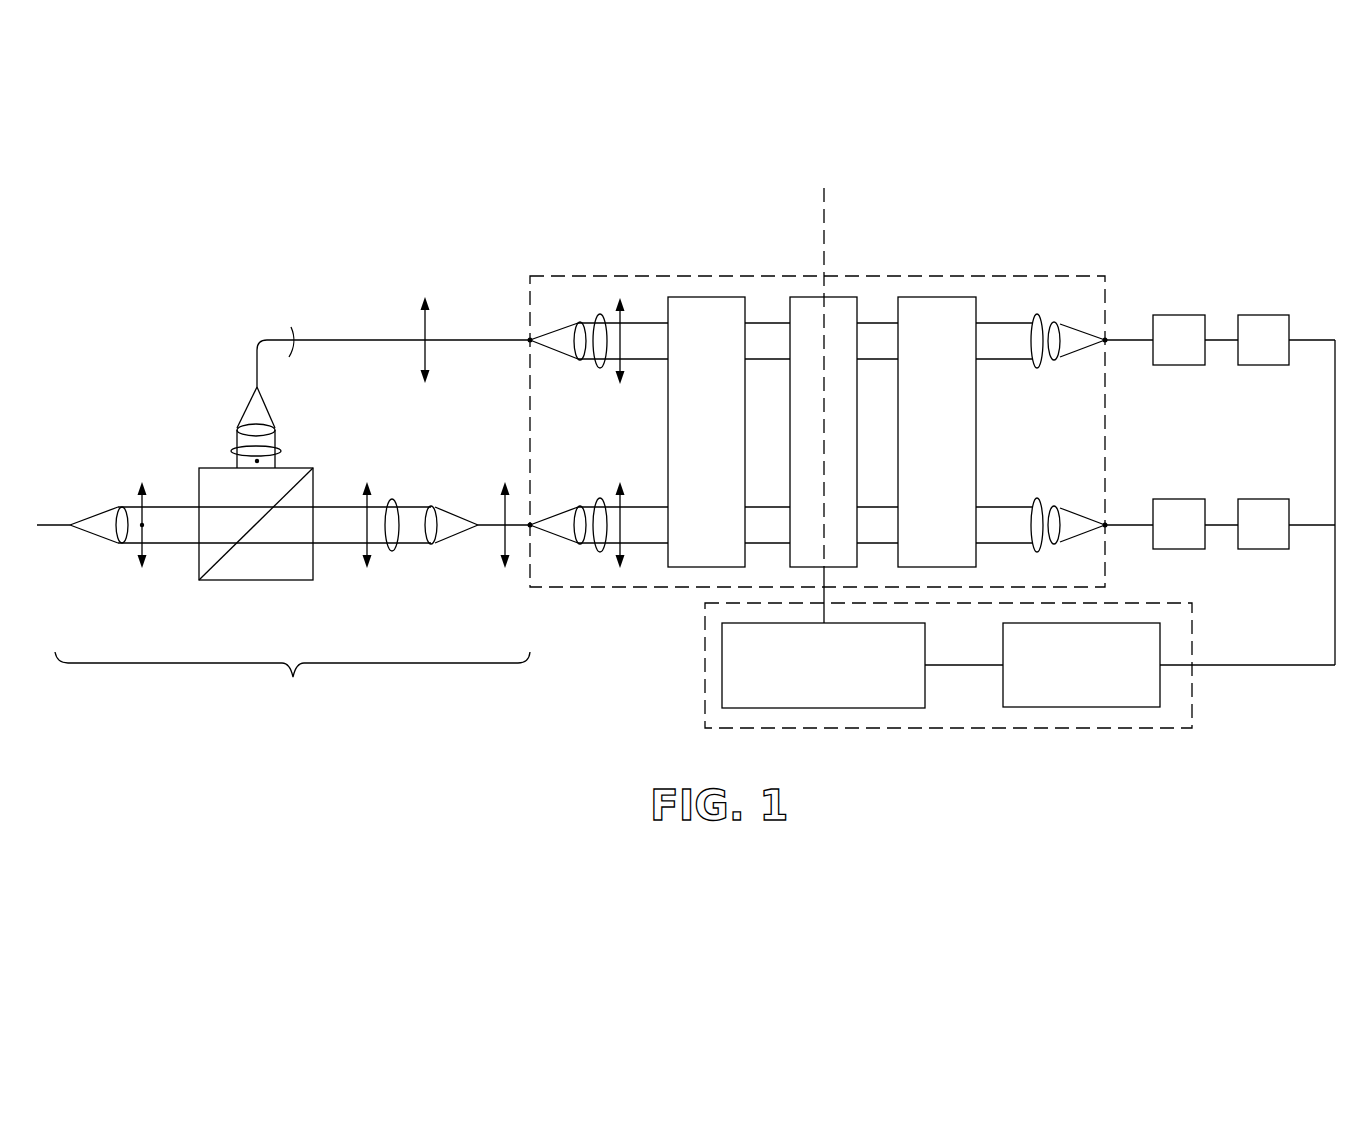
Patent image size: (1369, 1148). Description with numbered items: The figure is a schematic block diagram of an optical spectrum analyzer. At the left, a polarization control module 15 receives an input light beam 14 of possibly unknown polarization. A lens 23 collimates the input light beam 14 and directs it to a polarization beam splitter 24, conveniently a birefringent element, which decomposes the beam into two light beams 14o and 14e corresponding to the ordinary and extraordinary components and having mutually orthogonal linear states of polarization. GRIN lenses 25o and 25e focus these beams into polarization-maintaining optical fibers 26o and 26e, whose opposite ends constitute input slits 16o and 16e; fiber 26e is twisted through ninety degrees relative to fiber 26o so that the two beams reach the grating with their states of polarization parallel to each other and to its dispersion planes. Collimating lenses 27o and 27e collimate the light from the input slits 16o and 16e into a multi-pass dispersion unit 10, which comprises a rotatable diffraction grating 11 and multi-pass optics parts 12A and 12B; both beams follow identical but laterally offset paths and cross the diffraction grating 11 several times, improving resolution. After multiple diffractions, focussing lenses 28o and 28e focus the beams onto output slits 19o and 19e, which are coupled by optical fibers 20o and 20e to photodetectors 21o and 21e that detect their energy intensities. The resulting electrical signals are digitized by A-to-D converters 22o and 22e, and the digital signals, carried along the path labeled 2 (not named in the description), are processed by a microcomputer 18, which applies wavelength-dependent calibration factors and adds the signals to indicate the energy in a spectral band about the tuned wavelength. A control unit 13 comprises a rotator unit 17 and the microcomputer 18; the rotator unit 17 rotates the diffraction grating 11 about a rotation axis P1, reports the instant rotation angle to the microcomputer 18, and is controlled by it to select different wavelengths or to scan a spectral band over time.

The signal line 2 is at (1325, 602).
The multi-pass dispersion unit 10 is at (752, 276).
The diffraction grating 11 is at (810, 297).
The multi-pass optics part 12A is at (712, 297).
The multi-pass optics part 12B is at (940, 297).
The control unit 13 is at (947, 730).
The input light beam 14 is at (49, 522).
The light beam (extraordinary component) 14e is at (231, 451).
The light beam (ordinary component) 14o is at (392, 500).
The polarization control module 15 is at (292, 686).
The input slit 16e is at (527, 339).
The input slit 16o is at (531, 528).
The rotator unit 17 is at (830, 708).
The microcomputer 18 is at (1055, 707).
The output slit 19e is at (1107, 338).
The output slit 19o is at (1107, 522).
The optical fiber 20e is at (1132, 340).
The optical fiber 20o is at (1132, 524).
The photodetector 21e is at (1193, 315).
The photodetector 21o is at (1192, 500).
The A-to-D converter 22e is at (1267, 315).
The A-to-D converter 22o is at (1265, 500).
The lens 23 is at (113, 545).
The polarization beam splitter 24 is at (258, 582).
The GRIN lens 25e is at (252, 413).
The GRIN lens 25o is at (434, 545).
The polarization-maintaining optical fiber 26e is at (382, 338).
The polarization-maintaining optical fiber 26o is at (493, 528).
The collimating lens 27e is at (577, 328).
The collimating lens 27o is at (575, 513).
The focussing lens 28e is at (1068, 324).
The focussing lens 28o is at (1067, 510).
The rotation axis P1 is at (825, 218).